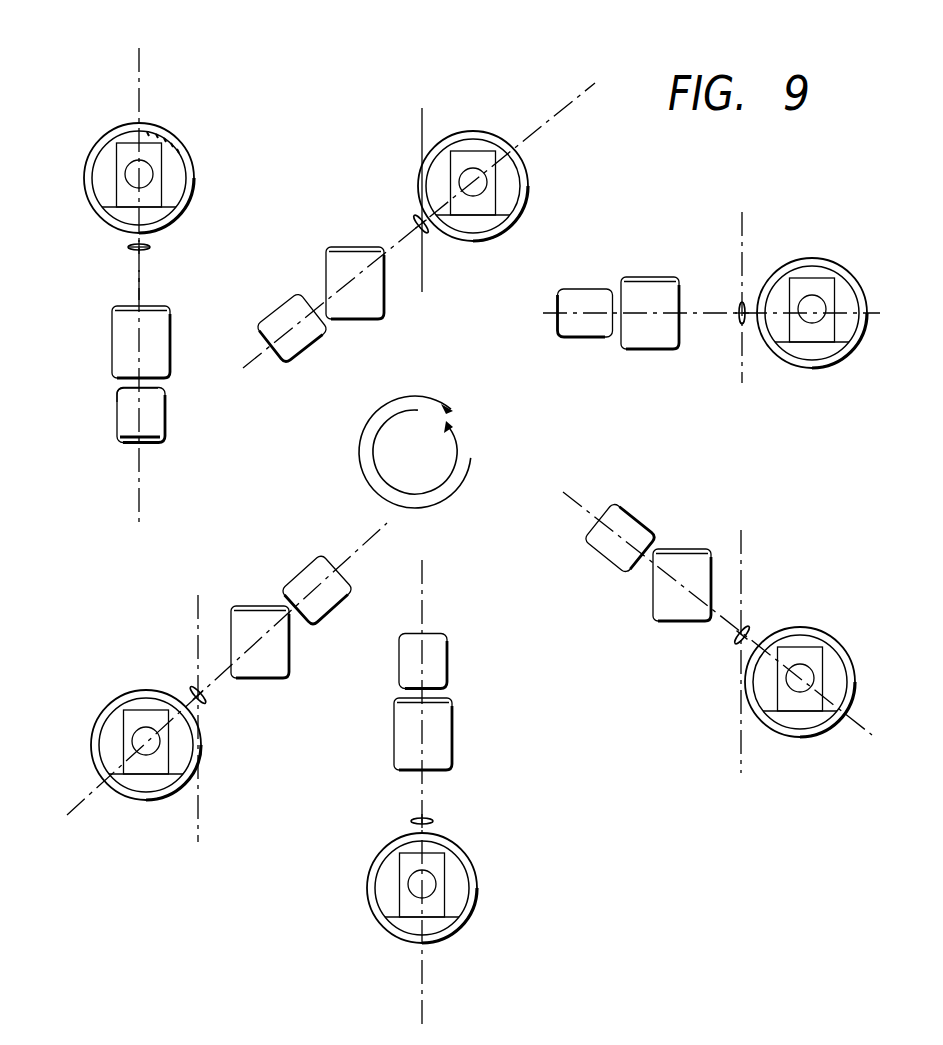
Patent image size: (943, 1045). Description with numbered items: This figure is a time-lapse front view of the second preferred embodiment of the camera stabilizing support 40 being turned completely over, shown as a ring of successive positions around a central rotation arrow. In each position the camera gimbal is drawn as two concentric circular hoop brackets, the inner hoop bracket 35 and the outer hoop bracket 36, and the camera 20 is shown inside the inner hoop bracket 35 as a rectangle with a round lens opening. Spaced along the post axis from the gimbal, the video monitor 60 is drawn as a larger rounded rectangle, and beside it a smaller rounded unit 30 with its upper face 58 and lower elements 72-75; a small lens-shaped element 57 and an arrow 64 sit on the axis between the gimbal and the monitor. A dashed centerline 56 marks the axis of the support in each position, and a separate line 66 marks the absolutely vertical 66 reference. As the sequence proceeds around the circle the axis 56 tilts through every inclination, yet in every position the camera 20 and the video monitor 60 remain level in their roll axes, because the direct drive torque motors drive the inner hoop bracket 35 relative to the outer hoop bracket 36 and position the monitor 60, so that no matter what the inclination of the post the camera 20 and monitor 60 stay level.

The camera 20 is at (125, 155).
The sensor unit 30 is at (125, 418).
The inner hoop bracket 35 is at (189, 170).
The outer hoop bracket 36 is at (190, 200).
The camera stabilizing support 40 is at (136, 291).
The rotation axis 56 is at (139, 60).
The lens 57 is at (152, 247).
The top face of sensor unit 58 is at (124, 398).
The video monitor 60 is at (125, 336).
The direction arrow 64 is at (128, 247).
The absolutely vertical 66 is at (139, 88).
The sensor elements 72-75 is at (128, 436).